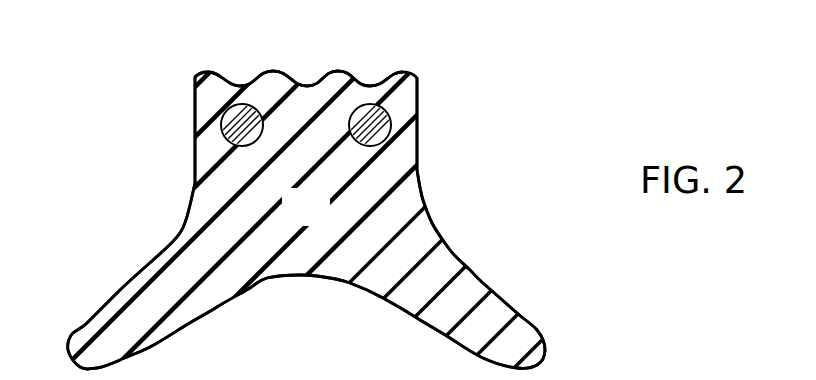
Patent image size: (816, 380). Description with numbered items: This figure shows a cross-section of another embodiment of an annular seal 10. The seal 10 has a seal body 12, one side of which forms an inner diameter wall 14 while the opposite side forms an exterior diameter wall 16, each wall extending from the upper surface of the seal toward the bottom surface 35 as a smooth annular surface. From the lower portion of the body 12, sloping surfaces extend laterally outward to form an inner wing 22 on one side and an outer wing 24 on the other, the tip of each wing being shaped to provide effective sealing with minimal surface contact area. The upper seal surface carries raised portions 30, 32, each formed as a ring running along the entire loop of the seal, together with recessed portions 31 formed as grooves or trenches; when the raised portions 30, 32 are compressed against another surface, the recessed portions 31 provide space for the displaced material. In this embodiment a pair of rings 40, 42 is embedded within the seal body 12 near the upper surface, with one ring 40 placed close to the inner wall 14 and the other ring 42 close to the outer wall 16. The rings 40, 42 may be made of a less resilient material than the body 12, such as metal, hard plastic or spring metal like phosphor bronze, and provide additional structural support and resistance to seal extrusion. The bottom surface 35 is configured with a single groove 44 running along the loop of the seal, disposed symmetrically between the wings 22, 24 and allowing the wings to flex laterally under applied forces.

The seal 10 is at (521, 92).
The seal body 12 is at (321, 221).
The inner diameter wall 14 is at (194, 164).
The exterior diameter wall 16 is at (418, 152).
The inner wing 22 is at (102, 343).
The outer wing 24 is at (519, 339).
The raised portion 30 is at (273, 66).
The recessed portions 31 is at (236, 84).
The raised portion 32 is at (336, 68).
The bottom surface 35 is at (258, 292).
The ring 40 is at (221, 128).
The ring 42 is at (391, 121).
The groove 44 is at (317, 277).